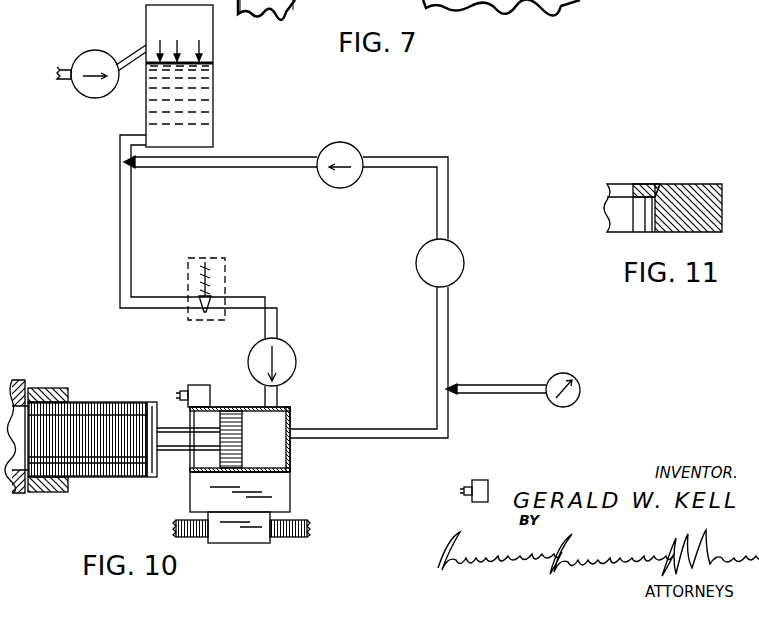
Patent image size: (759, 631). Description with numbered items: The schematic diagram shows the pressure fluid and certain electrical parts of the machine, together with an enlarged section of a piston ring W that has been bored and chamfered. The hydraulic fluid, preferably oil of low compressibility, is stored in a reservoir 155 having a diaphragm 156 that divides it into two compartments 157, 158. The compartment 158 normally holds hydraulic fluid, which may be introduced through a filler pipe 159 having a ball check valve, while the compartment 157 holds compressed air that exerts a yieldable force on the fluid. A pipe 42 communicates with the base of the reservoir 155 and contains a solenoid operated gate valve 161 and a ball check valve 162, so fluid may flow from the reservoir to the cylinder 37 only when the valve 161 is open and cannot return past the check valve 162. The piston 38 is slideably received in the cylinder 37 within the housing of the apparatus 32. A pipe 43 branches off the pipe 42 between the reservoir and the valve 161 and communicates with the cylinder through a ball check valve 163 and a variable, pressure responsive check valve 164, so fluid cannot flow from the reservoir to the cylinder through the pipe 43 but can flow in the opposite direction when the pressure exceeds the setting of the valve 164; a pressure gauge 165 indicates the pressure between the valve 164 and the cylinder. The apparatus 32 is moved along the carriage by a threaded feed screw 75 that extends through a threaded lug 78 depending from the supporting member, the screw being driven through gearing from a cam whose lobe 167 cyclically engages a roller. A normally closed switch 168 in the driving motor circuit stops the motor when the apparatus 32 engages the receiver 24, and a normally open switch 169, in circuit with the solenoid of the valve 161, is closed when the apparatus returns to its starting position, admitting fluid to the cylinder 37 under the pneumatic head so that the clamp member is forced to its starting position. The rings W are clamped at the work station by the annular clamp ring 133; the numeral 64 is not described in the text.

In FIG. 7, the lobe 167 is at (300, 6).
In FIG. 7, the wall 64 is at (528, 6).
In FIG. 10, the compartment 158 is at (210, 107).
In FIG. 10, the diaphragm 156 is at (214, 57).
In FIG. 10, the reservoir 155 is at (214, 79).
In FIG. 10, the filler pipe 159 is at (62, 69).
In FIG. 10, the compartment 157 is at (148, 30).
In FIG. 10, the pipe 42 is at (278, 313).
In FIG. 10, the ball check valve 163 is at (361, 151).
In FIG. 10, the pipe 43 is at (449, 318).
In FIG. 10, the variable pressure responsive check valve 164 is at (463, 258).
In FIG. 10, the pressure gauge 165 is at (581, 390).
In FIG. 10, the solenoid operated gate valve 161 is at (226, 273).
In FIG. 10, the ball check valve 162 is at (296, 357).
In FIG. 10, the switch 168 is at (200, 381).
In FIG. 10, the cylinder 37 is at (292, 414).
In FIG. 10, the piston 38 is at (243, 439).
In FIG. 10, the apparatus 32 is at (299, 478).
In FIG. 10, the threaded lug 78 is at (258, 541).
In FIG. 10, the threaded feed screw 75 is at (301, 526).
In FIG. 10, the switch 169 is at (489, 488).
In FIG. 10, the ring W is at (125, 402).
In FIG. 11, the ring W is at (693, 196).
In FIG. 10, the receiver 24 is at (46, 386).
In FIG. 10, the annular clamp ring 133 is at (25, 382).